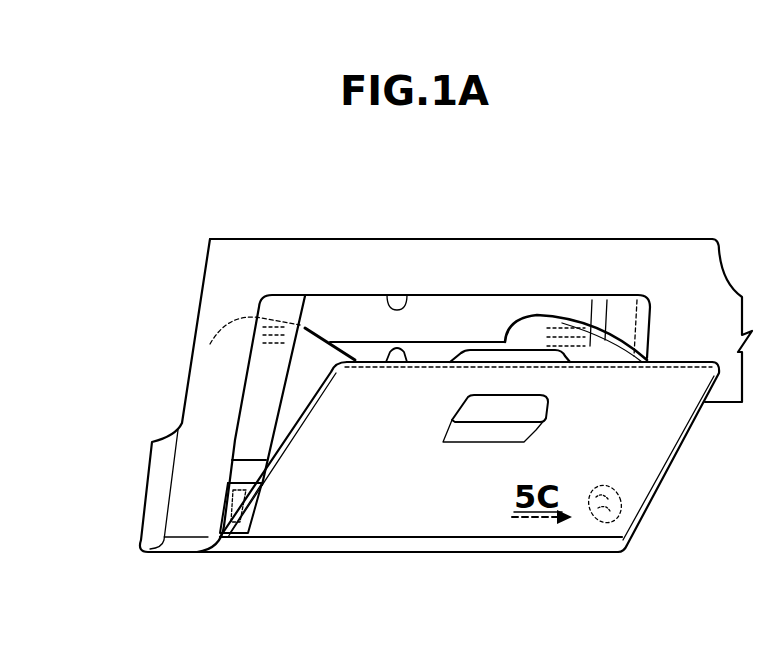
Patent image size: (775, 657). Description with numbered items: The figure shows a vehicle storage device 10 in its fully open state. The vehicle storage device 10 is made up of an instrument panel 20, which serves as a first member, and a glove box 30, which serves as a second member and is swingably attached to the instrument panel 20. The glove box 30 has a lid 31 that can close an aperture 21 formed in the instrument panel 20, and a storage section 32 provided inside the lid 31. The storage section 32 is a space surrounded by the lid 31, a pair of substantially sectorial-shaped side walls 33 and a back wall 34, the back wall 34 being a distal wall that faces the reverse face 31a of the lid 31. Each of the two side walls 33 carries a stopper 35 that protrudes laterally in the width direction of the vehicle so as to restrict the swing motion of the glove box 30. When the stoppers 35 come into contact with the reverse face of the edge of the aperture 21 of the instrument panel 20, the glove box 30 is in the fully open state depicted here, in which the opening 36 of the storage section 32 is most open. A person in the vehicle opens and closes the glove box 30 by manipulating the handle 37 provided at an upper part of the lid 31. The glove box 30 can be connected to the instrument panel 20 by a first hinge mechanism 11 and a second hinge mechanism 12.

The vehicle storage device 10 is at (645, 128).
The first hinge mechanism 11 is at (605, 542).
The second hinge mechanism 12 is at (250, 542).
The instrument panel 20 is at (601, 266).
The aperture 21 is at (399, 238).
The glove box 30 is at (440, 542).
The lid 31 is at (364, 521).
The reverse face of the lid 31a is at (402, 352).
The storage section 32 is at (440, 357).
The side wall 33 is at (303, 373).
The back wall 34 is at (474, 348).
The stopper 35 is at (252, 342).
The opening 36 is at (371, 340).
The handle 37 is at (495, 413).